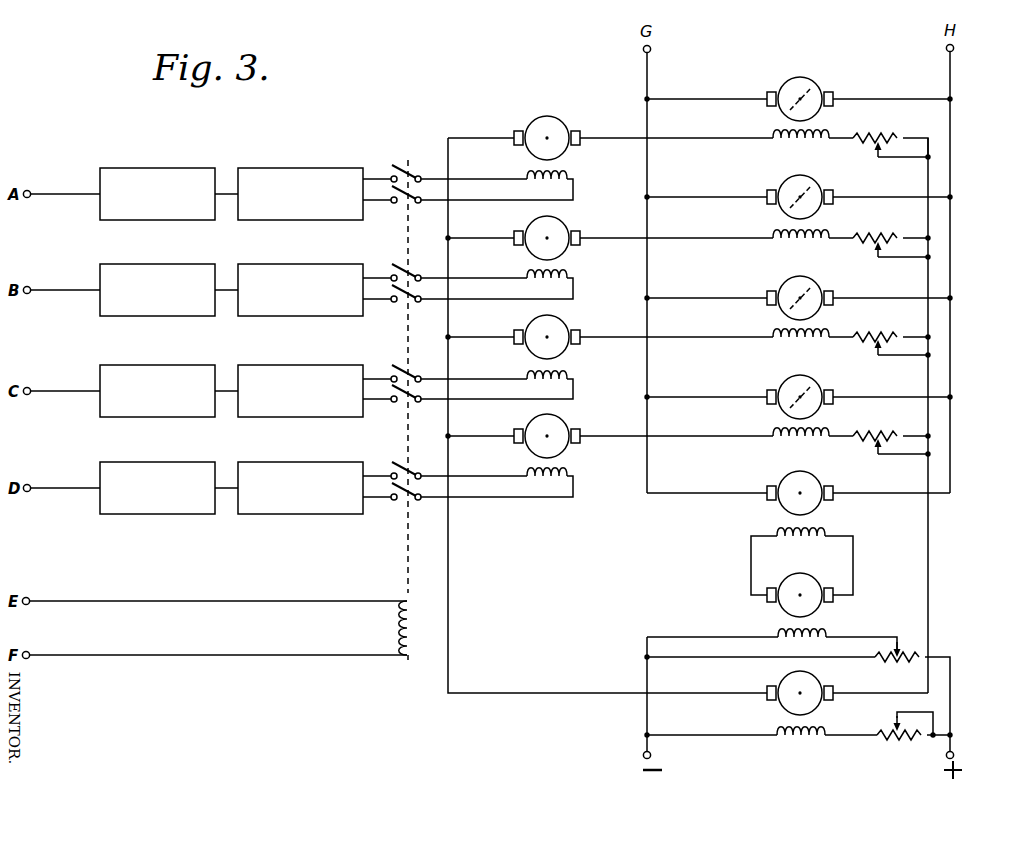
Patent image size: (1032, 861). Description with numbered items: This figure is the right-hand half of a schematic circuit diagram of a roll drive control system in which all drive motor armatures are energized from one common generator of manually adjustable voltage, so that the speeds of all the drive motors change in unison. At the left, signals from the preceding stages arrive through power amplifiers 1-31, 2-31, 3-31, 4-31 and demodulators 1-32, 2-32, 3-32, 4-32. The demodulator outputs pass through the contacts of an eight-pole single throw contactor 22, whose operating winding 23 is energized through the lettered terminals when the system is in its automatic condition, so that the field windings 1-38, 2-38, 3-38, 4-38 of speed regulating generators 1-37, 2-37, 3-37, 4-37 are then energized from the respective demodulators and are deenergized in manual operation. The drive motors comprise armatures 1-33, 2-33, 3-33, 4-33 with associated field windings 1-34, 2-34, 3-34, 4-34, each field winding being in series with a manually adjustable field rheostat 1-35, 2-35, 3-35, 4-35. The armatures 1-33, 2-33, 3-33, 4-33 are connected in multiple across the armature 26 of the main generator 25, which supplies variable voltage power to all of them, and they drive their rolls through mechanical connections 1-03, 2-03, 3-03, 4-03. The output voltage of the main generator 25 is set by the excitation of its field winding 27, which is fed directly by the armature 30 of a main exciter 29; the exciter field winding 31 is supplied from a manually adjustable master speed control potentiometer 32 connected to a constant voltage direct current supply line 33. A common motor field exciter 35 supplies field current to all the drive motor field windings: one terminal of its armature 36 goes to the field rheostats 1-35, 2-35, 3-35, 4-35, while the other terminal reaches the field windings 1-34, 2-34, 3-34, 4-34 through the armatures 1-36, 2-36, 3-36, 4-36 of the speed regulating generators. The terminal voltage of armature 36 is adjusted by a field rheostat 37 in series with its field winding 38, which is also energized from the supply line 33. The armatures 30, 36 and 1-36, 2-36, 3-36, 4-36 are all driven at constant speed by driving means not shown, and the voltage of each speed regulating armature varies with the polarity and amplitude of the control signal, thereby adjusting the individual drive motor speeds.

The power amplifier 1-31 is at (175, 160).
The power amplifier 2-31 is at (170, 256).
The power amplifier 3-31 is at (170, 357).
The power amplifier 4-31 is at (166, 454).
The demodulator 1-32 is at (295, 168).
The demodulator 2-32 is at (310, 256).
The demodulator 3-32 is at (295, 365).
The demodulator 4-32 is at (290, 452).
The drive motor armature 1-33 is at (806, 80).
The drive motor armature 2-33 is at (806, 180).
The drive motor armature 3-33 is at (806, 281).
The drive motor armature 4-33 is at (803, 380).
The mechanical connection 1-03 is at (818, 79).
The mechanical connection 2-03 is at (820, 180).
The mechanical connection 3-03 is at (816, 281).
The mechanical connection 4-03 is at (816, 378).
The field winding 1-34 is at (787, 143).
The field winding 2-34 is at (787, 243).
The field winding 3-34 is at (789, 343).
The field winding 4-34 is at (786, 442).
The field rheostat 1-35 is at (893, 134).
The field rheostat 2-35 is at (893, 234).
The field rheostat 3-35 is at (893, 333).
The field rheostat 4-35 is at (893, 431).
The speed regulating generator armature 1-36 is at (549, 116).
The speed regulating generator armature 2-36 is at (534, 223).
The speed regulating generator armature 3-36 is at (534, 318).
The speed regulating generator armature 4-36 is at (534, 419).
The speed regulating generator 1-37 is at (572, 163).
The speed regulating generator 2-37 is at (572, 261).
The speed regulating generator 3-37 is at (571, 314).
The speed regulating generator 4-37 is at (569, 414).
The field winding 1-38 is at (532, 180).
The field winding 2-38 is at (530, 282).
The field winding 3-38 is at (530, 380).
The field winding 4-38 is at (530, 478).
The eight-pole single throw contactor 22 is at (396, 537).
The operating winding 23 is at (402, 628).
The main generator 25 is at (747, 523).
The main generator armature 26 is at (813, 479).
The field winding 27 is at (802, 543).
The main exciter 29 is at (761, 617).
The main exciter armature 30 is at (795, 574).
The field winding 31 is at (816, 629).
The master speed control potentiometer 32 is at (920, 642).
The constant voltage direct current supply line 33 is at (957, 710).
The common motor field exciter 35 is at (771, 717).
The exciter armature 36 is at (777, 675).
The field rheostat 37 is at (898, 740).
The field winding 38 is at (816, 740).